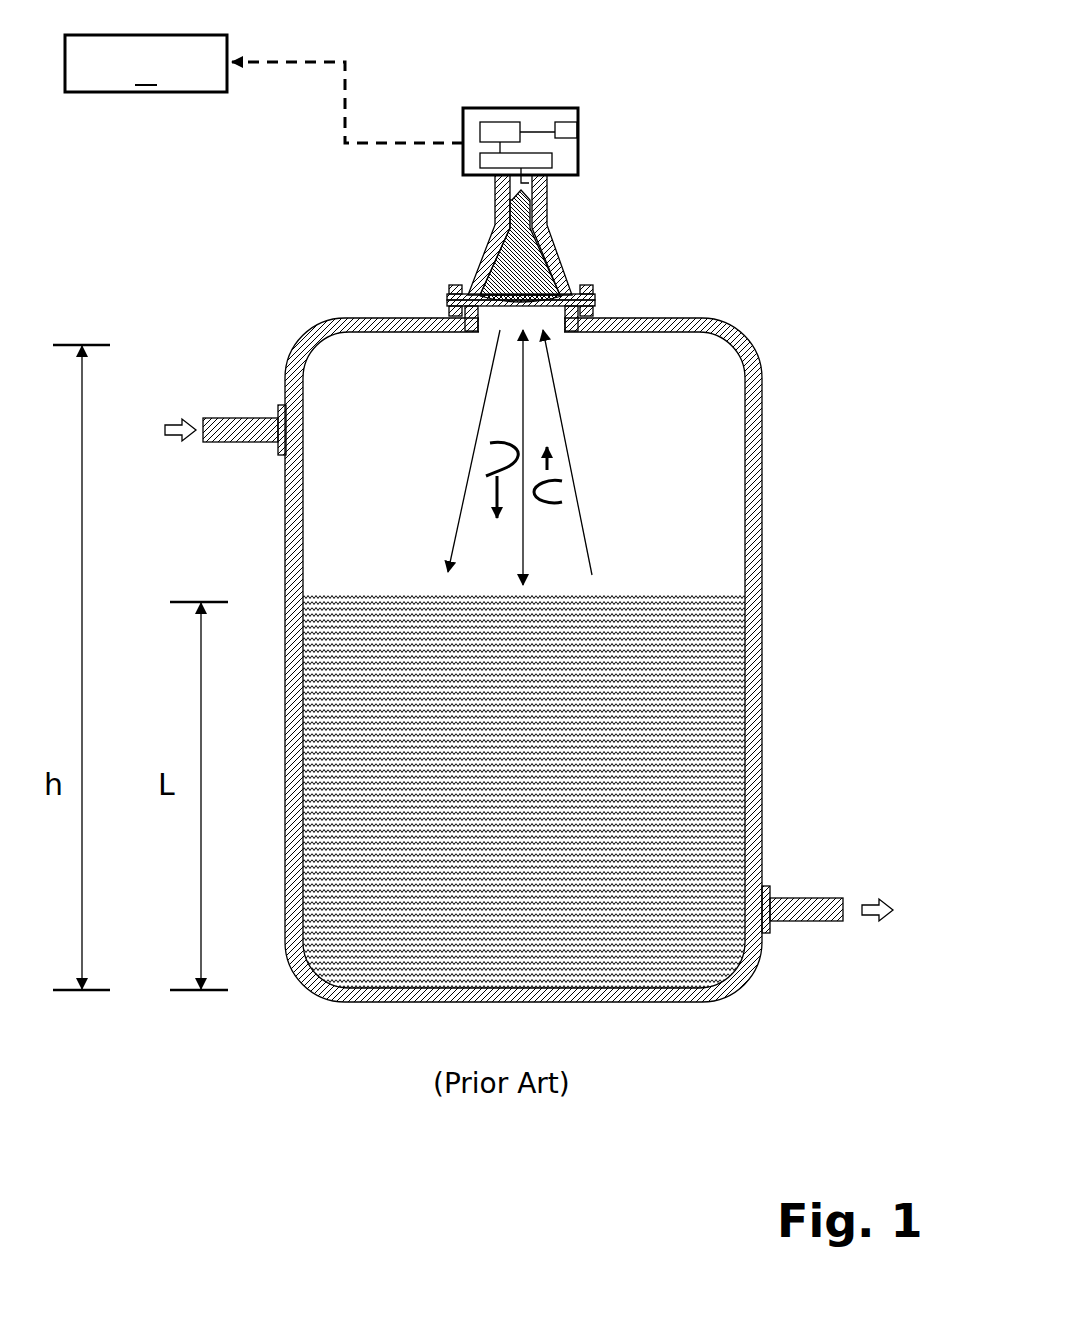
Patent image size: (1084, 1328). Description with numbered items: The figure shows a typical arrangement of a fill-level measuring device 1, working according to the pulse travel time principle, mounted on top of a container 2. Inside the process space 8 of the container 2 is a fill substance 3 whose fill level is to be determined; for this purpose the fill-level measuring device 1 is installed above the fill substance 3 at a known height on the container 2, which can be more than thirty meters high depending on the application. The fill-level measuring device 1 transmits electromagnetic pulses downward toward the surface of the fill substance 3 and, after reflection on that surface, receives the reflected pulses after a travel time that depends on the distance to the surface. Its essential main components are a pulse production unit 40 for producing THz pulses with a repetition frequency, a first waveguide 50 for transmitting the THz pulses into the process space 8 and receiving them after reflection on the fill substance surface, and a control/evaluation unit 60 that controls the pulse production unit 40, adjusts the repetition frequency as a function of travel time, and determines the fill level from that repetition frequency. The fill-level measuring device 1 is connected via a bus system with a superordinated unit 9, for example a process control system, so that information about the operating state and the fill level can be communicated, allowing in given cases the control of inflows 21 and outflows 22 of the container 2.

The fill-level measuring device 1 is at (664, 160).
The container 2 is at (583, 654).
The fill substance 3 is at (672, 798).
The process space 8 is at (686, 490).
The superordinated unit 9 is at (110, 92).
The inflows 21 is at (252, 418).
The outflows 22 is at (790, 898).
The pulse production unit 40 is at (707, 93).
The first waveguide 50 is at (478, 273).
The control/evaluation unit 60 is at (580, 121).